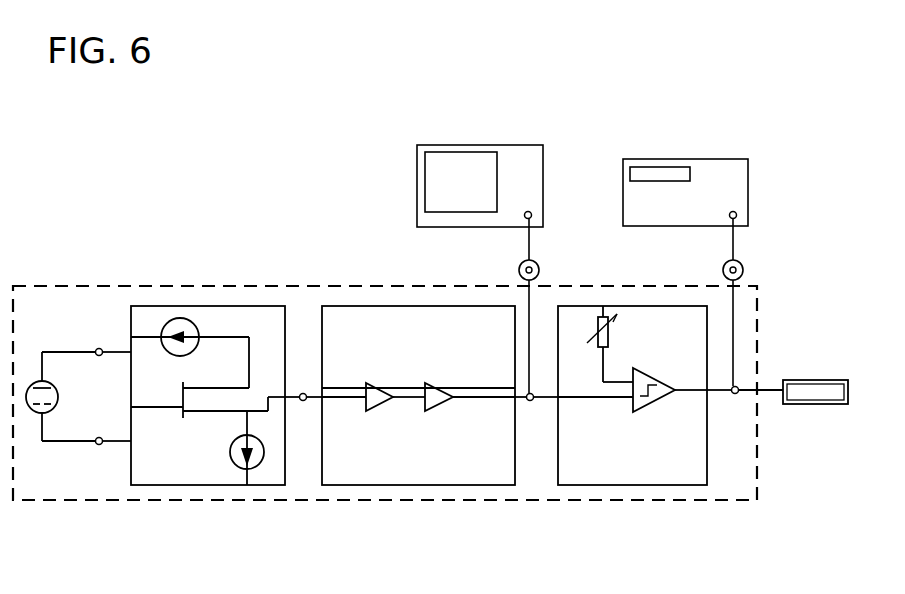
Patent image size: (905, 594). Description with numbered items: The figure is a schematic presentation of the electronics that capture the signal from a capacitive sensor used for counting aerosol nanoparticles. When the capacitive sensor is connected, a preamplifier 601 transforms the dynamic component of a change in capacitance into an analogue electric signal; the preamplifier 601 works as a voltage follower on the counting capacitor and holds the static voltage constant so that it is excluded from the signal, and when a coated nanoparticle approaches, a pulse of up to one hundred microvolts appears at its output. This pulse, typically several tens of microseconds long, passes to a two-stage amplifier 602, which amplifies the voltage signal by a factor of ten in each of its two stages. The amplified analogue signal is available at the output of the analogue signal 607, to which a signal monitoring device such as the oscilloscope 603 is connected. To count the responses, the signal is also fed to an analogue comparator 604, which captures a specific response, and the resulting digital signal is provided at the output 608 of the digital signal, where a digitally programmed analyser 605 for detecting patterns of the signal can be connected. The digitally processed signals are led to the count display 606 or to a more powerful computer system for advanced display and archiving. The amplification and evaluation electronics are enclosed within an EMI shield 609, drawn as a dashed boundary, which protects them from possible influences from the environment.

The preamplifier 601 is at (143, 487).
The two-stage amplifier 602 is at (343, 487).
The oscilloscope 603 is at (417, 170).
The analogue comparator 604 is at (573, 487).
The digitally programmed analyser 605 is at (623, 171).
The count display 606 is at (810, 422).
The output of the analogue signal 607 is at (540, 274).
The output of the digital signal 608 is at (744, 273).
The EMI shield 609 is at (742, 502).